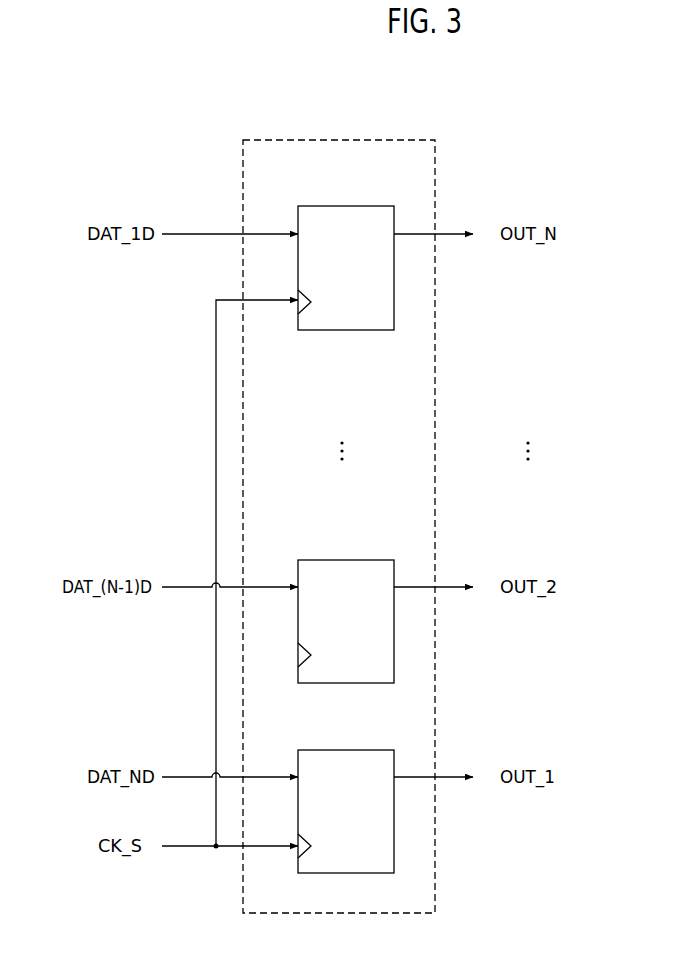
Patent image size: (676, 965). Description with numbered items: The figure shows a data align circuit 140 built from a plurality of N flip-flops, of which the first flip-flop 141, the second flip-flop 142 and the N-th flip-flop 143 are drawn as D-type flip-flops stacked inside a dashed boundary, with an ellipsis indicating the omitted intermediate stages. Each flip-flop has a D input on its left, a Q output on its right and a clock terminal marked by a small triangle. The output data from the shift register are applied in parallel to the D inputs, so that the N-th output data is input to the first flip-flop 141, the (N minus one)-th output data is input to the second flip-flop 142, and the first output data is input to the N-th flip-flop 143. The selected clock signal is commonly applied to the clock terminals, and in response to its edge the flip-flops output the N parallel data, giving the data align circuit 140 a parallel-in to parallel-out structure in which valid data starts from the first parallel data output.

The data align circuit 140 is at (462, 92).
The first flip-flop 141 is at (347, 205).
The second flip-flop 142 is at (347, 559).
The N-th flip-flop 143 is at (347, 749).